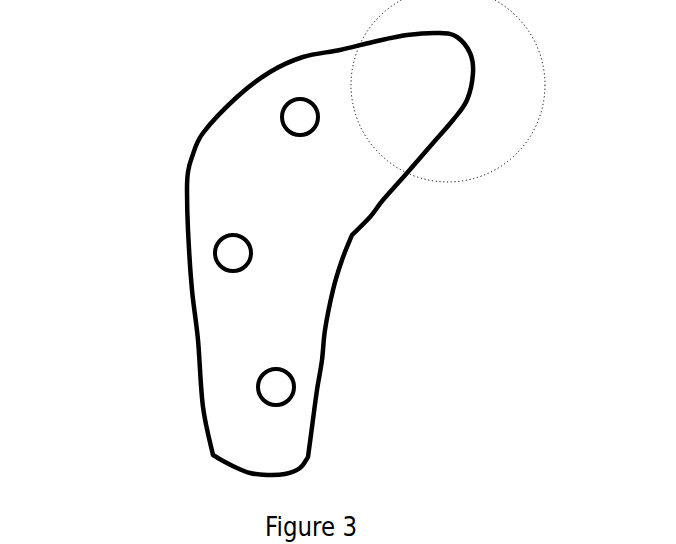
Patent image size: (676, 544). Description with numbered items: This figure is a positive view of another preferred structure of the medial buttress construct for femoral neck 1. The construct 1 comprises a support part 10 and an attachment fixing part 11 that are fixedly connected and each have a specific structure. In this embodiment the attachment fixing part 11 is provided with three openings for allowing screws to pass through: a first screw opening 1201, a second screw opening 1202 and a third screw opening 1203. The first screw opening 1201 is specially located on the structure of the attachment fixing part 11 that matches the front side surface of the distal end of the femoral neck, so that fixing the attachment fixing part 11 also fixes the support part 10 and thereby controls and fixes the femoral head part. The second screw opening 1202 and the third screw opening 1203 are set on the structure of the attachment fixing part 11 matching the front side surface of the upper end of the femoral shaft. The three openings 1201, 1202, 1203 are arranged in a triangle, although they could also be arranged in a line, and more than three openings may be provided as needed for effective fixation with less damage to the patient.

The medial buttress construct for femoral neck 1 is at (146, 108).
The support part 10 is at (420, 98).
The attachment fixing part 11 is at (313, 320).
The first screw opening 1201 is at (300, 117).
The second screw opening 1202 is at (233, 253).
The third screw opening 1203 is at (276, 387).